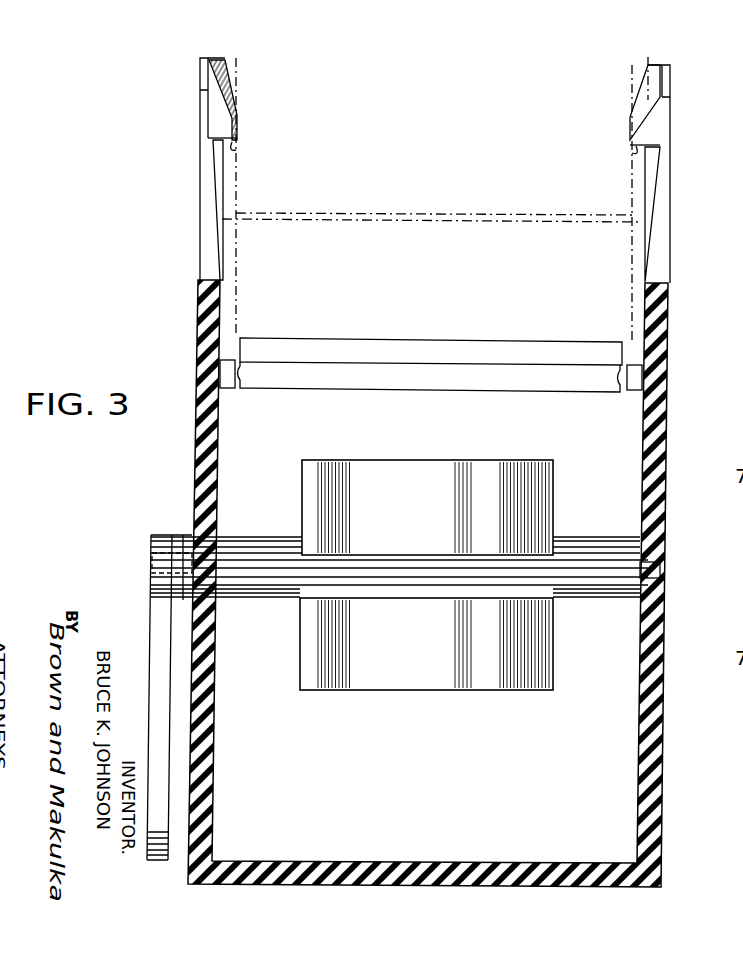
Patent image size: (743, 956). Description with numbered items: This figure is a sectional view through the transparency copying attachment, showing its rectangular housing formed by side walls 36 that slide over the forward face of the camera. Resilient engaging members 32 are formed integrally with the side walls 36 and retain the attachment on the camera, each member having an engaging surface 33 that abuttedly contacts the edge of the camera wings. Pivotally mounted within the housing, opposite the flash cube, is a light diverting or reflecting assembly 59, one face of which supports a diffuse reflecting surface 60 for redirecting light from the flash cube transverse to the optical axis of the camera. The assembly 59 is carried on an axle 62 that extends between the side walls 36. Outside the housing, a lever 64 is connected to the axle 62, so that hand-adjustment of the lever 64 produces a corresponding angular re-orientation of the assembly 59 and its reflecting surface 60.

The resilient engaging member 32 is at (202, 173).
The engaging surface 33 is at (236, 148).
The side wall 36 is at (207, 730).
The light diverting or reflecting assembly 59 is at (340, 718).
The diffuse reflecting surface 60 is at (553, 490).
The axle 62 is at (570, 567).
The lever 64 is at (162, 626).